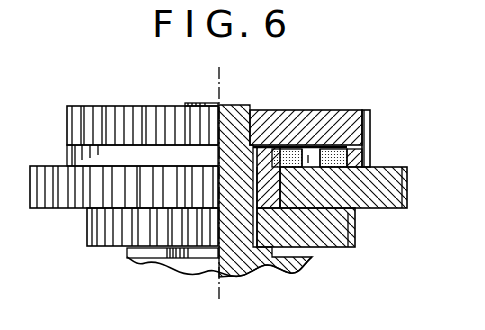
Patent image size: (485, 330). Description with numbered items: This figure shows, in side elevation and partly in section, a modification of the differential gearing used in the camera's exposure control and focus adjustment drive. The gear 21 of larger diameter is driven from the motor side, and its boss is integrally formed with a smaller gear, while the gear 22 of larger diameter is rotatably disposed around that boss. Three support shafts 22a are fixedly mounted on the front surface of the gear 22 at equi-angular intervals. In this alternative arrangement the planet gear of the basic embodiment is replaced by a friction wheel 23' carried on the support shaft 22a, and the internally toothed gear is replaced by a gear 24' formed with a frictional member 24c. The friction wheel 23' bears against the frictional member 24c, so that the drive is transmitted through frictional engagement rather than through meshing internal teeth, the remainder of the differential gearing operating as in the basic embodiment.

The gear 21 is at (343, 230).
The gear 22 is at (378, 178).
The support shaft 22a is at (308, 155).
The friction wheel 23' is at (295, 141).
The gear 24' is at (323, 120).
The frictional member 24c is at (347, 158).